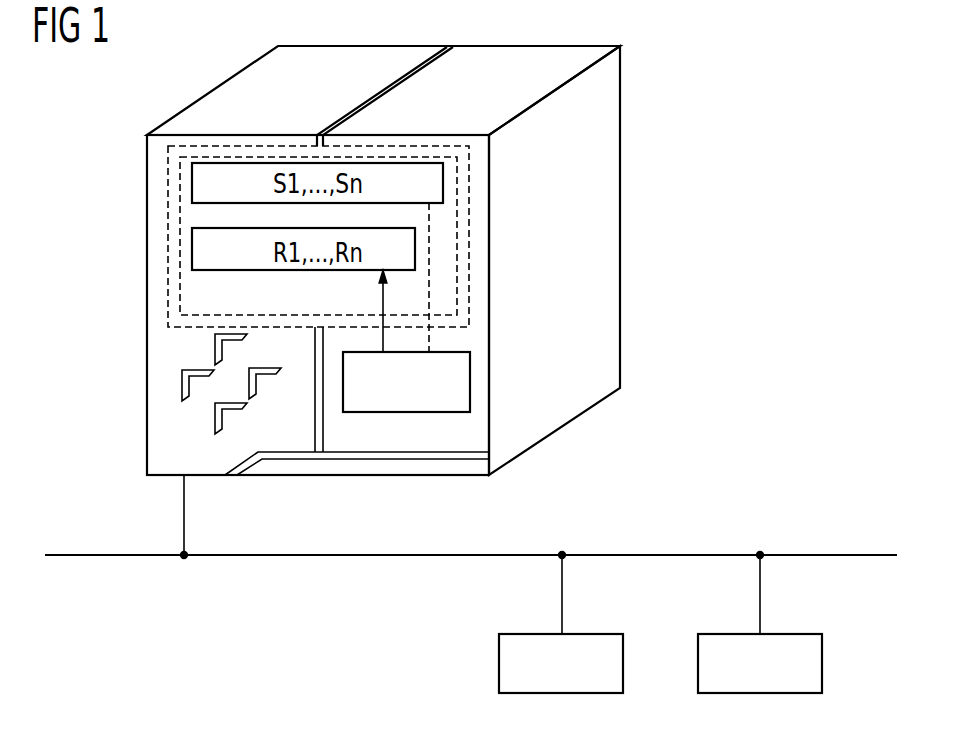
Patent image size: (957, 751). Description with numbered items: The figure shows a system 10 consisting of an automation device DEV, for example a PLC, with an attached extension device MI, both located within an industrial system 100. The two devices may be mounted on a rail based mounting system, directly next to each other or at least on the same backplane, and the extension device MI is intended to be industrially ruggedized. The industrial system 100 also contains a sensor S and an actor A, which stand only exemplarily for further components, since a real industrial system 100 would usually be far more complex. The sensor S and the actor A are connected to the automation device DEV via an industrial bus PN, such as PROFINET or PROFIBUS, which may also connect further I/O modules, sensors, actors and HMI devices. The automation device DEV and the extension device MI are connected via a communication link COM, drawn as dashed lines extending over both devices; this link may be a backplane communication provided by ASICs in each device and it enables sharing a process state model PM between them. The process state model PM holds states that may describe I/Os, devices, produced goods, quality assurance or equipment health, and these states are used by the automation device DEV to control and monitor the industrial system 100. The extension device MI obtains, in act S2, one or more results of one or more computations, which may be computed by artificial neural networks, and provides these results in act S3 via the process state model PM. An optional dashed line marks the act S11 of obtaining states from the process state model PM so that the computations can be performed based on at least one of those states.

The system 10 is at (157, 104).
The industrial system 100 is at (521, 367).
The communication link COM is at (168, 180).
The process state model PM is at (180, 237).
The act of obtaining states S11 is at (429, 246).
The act of providing results S3 is at (383, 298).
The act of obtaining results S2 is at (470, 378).
The automation device DEV is at (283, 433).
The extension device MI is at (403, 433).
The industrial bus PN is at (95, 557).
The sensor S is at (561, 623).
The actor A is at (760, 623).